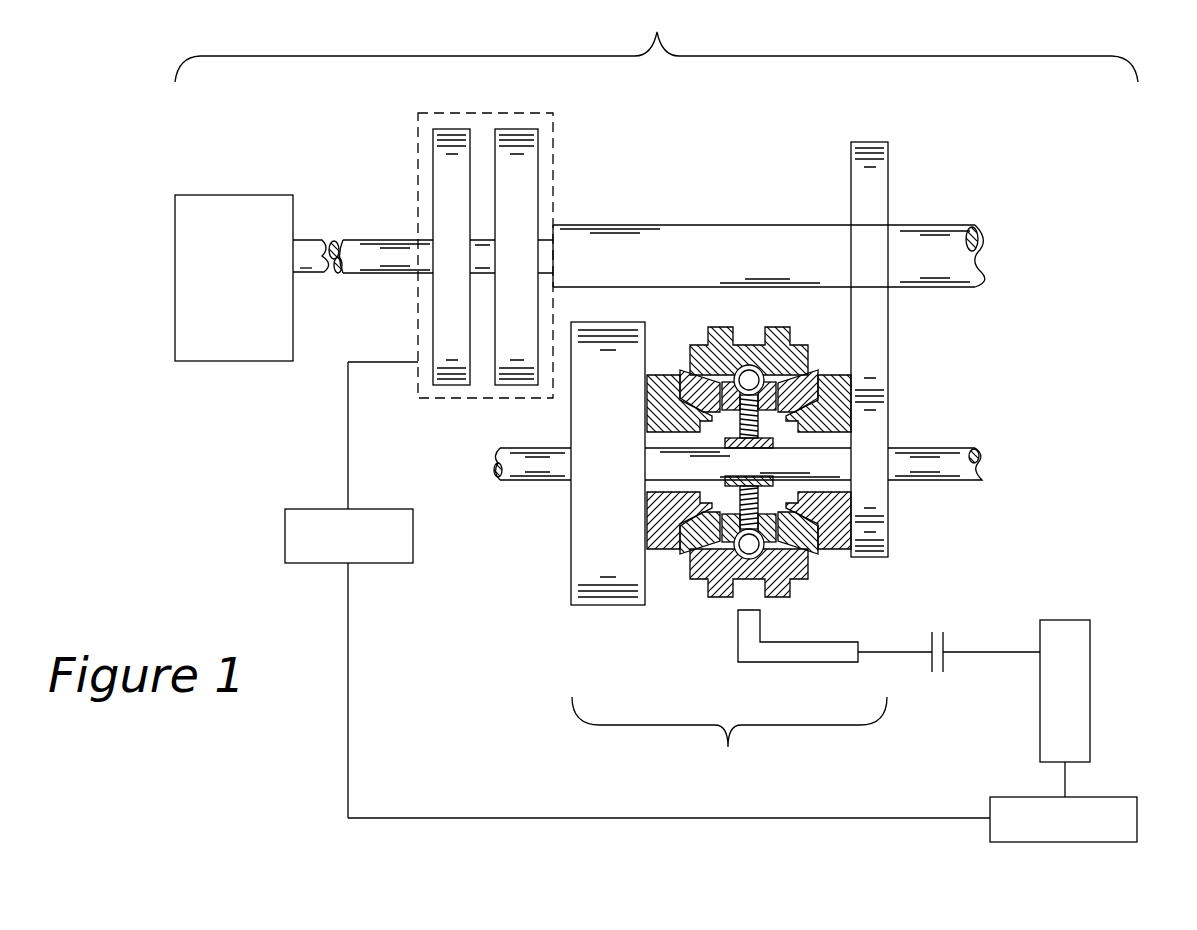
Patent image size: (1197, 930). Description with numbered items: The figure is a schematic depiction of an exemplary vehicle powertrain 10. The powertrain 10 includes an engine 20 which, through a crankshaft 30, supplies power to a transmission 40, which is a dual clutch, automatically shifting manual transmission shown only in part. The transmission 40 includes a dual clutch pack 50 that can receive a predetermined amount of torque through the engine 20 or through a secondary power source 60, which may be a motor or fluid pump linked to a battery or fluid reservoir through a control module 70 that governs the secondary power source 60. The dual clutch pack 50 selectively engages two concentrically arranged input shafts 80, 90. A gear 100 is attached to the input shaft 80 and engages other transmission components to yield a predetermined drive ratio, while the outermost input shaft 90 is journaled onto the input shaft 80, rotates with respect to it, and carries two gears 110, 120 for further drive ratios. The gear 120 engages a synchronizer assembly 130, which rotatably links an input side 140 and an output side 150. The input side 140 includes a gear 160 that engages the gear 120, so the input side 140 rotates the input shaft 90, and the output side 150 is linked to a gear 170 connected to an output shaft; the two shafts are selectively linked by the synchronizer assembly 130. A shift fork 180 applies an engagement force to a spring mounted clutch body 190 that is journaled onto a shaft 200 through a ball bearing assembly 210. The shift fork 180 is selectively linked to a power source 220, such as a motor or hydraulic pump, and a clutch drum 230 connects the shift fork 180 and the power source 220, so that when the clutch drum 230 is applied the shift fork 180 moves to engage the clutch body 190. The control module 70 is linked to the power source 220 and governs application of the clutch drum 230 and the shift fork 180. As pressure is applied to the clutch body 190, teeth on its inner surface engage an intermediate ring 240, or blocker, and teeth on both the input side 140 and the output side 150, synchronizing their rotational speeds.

The vehicle powertrain 10 is at (656, 41).
The engine 20 is at (182, 288).
The crankshaft 30 is at (300, 275).
The transmission 40 is at (980, 393).
The dual clutch pack 50 is at (417, 147).
The secondary power source 60 is at (285, 556).
The control module 70 is at (1120, 800).
The input shaft 80 is at (343, 242).
The input shaft 90 is at (693, 233).
The gear 100 is at (453, 128).
The gear 110 is at (513, 128).
The gear 120 is at (870, 140).
The synchronizer assembly 130 is at (759, 535).
The input side of the synchronizer 140 is at (850, 519).
The output side of the synchronizer 150 is at (668, 560).
The gear 160 is at (880, 426).
The gear 170 is at (582, 563).
The shift fork 180 is at (787, 660).
The clutch body 190 is at (800, 323).
The shaft 200 is at (958, 452).
The ball bearing assembly 210 is at (700, 362).
The power source 220 is at (1082, 675).
The clutch drum 230 is at (963, 608).
The intermediate ring 240 is at (852, 392).